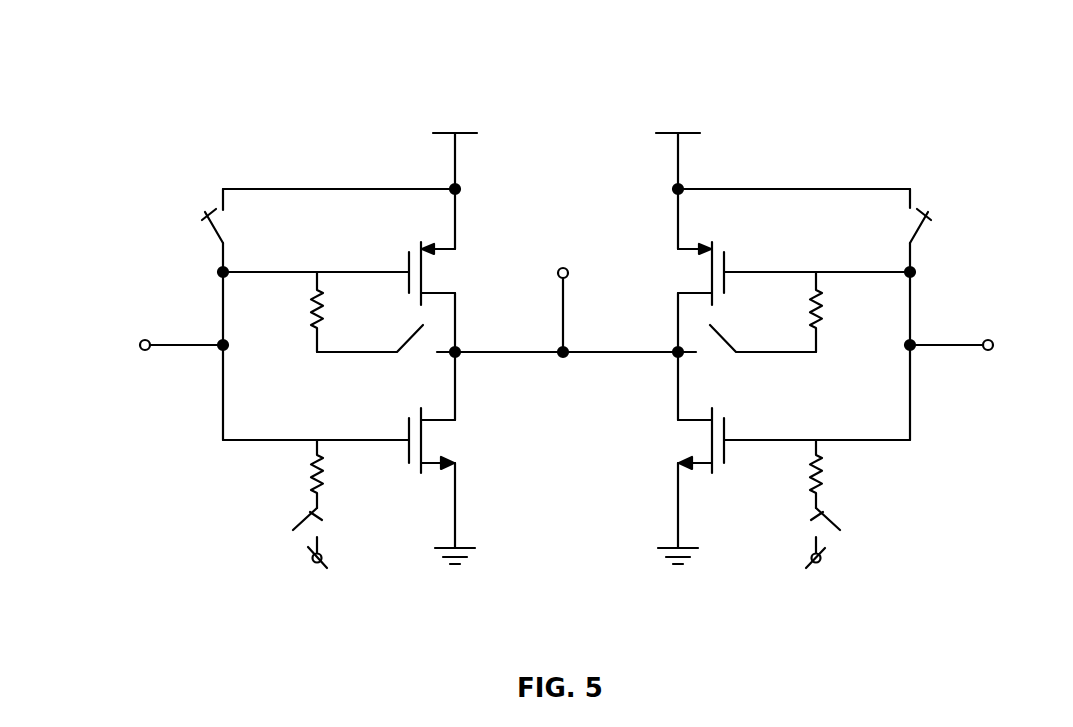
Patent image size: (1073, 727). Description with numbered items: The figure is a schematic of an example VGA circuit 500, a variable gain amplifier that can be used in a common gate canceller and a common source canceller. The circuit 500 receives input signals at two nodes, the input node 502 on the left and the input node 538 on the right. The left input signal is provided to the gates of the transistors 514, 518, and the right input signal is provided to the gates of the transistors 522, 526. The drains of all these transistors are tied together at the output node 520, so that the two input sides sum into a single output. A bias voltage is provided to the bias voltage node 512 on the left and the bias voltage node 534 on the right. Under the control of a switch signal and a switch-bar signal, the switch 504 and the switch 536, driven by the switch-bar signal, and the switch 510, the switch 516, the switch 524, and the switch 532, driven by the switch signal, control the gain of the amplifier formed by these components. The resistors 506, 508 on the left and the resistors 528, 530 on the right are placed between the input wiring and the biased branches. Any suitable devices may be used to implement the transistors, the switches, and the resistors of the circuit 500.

The VGA circuit 500 is at (136, 72).
The input node 502 is at (140, 341).
The switch 504 is at (208, 225).
The resistor 506 is at (313, 313).
The resistor 508 is at (325, 482).
The switch 510 is at (303, 516).
The bias voltage node 512 is at (308, 548).
The transistor 514 is at (406, 262).
The switch 516 is at (412, 338).
The transistor 518 is at (406, 428).
The output node 520 is at (568, 277).
The transistor 522 is at (726, 258).
The switch 524 is at (722, 342).
The transistor 526 is at (726, 427).
The resistor 528 is at (820, 312).
The resistor 530 is at (808, 468).
The switch 532 is at (832, 518).
The bias voltage node 534 is at (825, 550).
The switch 536 is at (940, 222).
The input node 538 is at (990, 338).